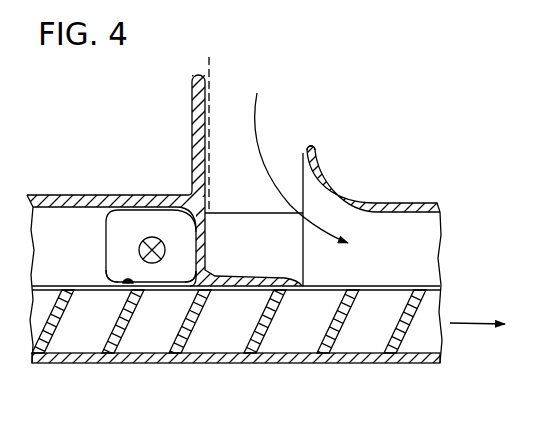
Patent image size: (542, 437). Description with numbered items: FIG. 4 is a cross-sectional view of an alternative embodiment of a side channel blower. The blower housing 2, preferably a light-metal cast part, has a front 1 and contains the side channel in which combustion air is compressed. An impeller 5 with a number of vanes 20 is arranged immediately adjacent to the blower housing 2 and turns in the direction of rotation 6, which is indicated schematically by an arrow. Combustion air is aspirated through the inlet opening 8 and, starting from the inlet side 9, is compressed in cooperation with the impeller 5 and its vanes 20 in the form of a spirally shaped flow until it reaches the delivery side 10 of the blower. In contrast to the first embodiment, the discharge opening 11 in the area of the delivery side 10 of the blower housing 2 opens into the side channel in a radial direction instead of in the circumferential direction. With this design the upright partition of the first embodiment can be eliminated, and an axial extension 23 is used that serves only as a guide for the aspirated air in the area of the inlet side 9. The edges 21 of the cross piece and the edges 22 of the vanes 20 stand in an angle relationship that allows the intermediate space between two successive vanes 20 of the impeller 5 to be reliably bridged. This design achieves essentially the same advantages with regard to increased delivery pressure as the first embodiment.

The front of the blower housing 1 is at (70, 195).
The blower housing 2 is at (403, 198).
The impeller 5 is at (391, 367).
The direction of rotation 6 is at (472, 323).
The inlet opening 8 is at (300, 177).
The inlet side 9 is at (281, 150).
The delivery side 10 is at (140, 187).
The discharge opening 11 is at (125, 227).
The vanes 20 is at (110, 289).
The edges of the cross piece 21 is at (186, 291).
The edges of the vanes 22 is at (120, 290).
The axial extension 23 is at (200, 122).